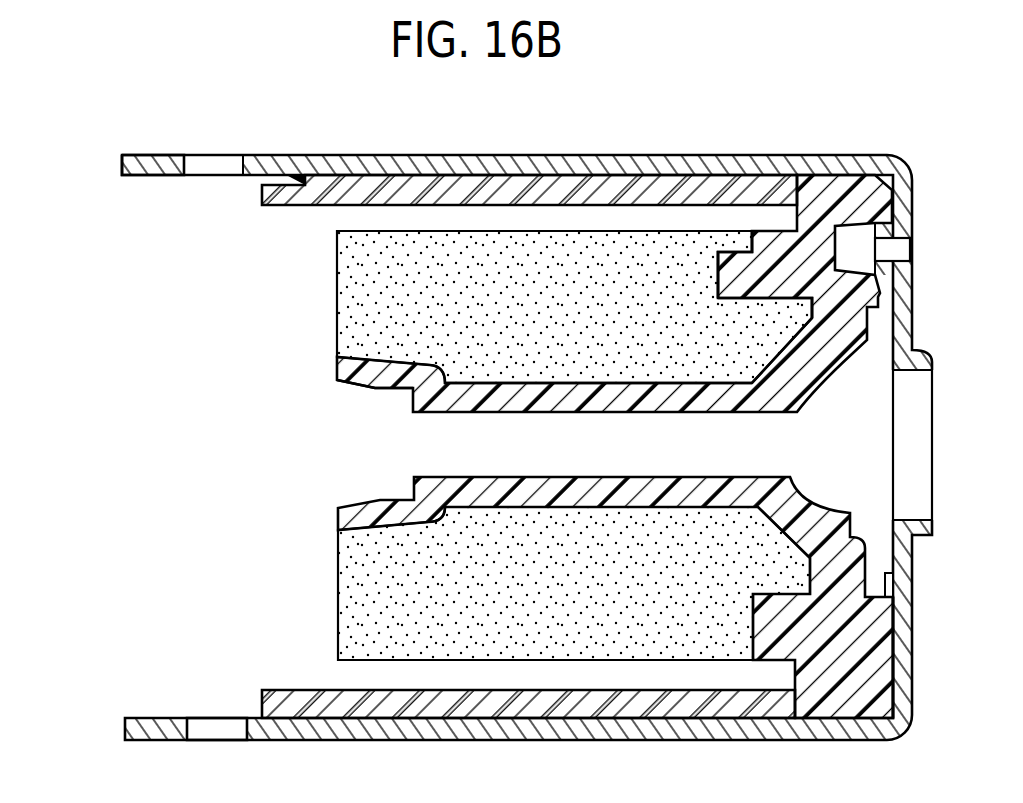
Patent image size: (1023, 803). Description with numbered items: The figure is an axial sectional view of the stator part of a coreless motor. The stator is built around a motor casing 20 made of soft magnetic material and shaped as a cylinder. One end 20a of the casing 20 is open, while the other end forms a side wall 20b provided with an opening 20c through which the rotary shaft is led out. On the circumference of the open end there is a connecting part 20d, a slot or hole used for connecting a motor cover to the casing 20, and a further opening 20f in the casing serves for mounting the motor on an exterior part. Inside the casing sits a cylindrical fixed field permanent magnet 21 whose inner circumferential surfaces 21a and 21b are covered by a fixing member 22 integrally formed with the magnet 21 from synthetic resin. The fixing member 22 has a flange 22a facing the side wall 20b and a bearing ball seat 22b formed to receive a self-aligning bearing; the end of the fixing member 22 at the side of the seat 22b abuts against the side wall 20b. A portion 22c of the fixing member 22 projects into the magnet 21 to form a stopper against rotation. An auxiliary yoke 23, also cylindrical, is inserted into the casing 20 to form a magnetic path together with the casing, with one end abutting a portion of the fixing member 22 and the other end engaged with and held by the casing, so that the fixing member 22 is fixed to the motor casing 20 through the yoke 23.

The motor casing 20 is at (513, 444).
The open end of casing 20a is at (122, 164).
The side wall of casing 20b is at (887, 663).
The opening 20c is at (304, 181).
The connecting part 20d is at (218, 729).
The mounting opening 20f is at (902, 244).
The fixed field permanent magnet 21 is at (574, 445).
The inner circumferential surface of magnet 21a is at (600, 385).
The inner circumferential surface of magnet 21b is at (812, 316).
The fixing member 22 is at (615, 445).
The flange 22a is at (830, 192).
The bearing ball seat 22b is at (798, 485).
The stopper portion 22c is at (722, 279).
The auxiliary yoke 23 is at (702, 178).